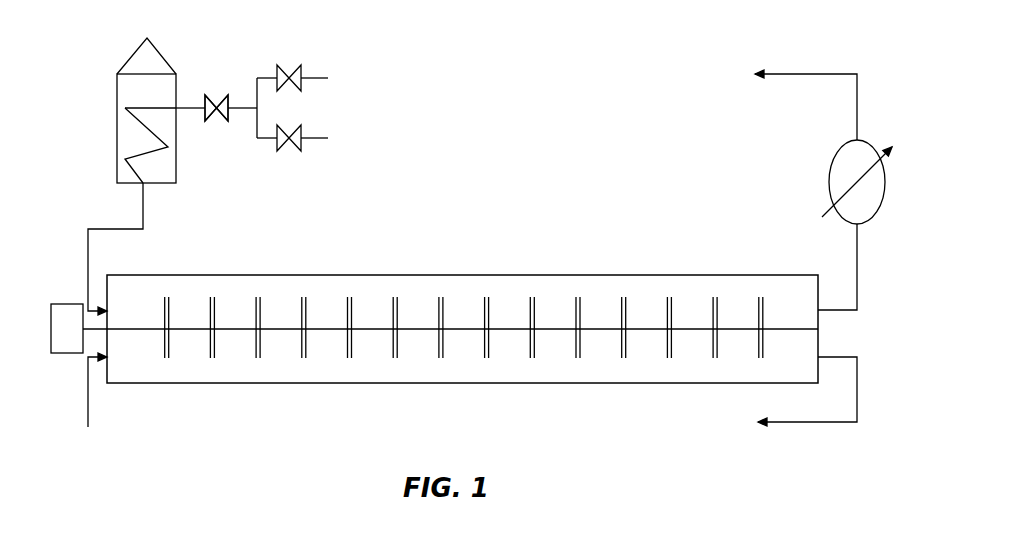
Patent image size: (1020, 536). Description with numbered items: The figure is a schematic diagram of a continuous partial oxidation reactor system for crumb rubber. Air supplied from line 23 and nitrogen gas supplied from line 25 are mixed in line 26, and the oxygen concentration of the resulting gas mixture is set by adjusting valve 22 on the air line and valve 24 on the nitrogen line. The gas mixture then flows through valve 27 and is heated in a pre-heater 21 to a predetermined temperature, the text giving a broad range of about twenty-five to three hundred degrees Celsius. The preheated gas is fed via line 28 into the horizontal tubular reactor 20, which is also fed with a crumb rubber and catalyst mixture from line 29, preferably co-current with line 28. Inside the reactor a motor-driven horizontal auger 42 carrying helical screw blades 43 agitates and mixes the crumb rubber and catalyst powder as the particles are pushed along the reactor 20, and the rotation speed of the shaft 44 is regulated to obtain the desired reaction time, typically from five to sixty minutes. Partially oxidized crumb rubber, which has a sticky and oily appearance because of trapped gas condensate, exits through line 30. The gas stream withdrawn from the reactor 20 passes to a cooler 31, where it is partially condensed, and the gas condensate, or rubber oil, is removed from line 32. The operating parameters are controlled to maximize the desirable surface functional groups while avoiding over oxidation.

The horizontal tubular reactor 20 is at (367, 385).
The pre-heater 21 is at (117, 90).
The valve 22 is at (280, 63).
The air line 23 is at (320, 75).
The valve 24 is at (287, 150).
The nitrogen gas line 25 is at (318, 138).
The mixing line 26 is at (246, 103).
The valve 27 is at (208, 122).
The gas feed line 28 is at (88, 237).
The crumb rubber and catalyst feed line 29 is at (92, 405).
The product outlet line 30 is at (792, 397).
The cooler 31 is at (832, 163).
The condensate line 32 is at (792, 187).
The motor-driven horizontal auger 42 is at (77, 303).
The helical screw blades 43 is at (442, 348).
The shaft 44 is at (455, 328).